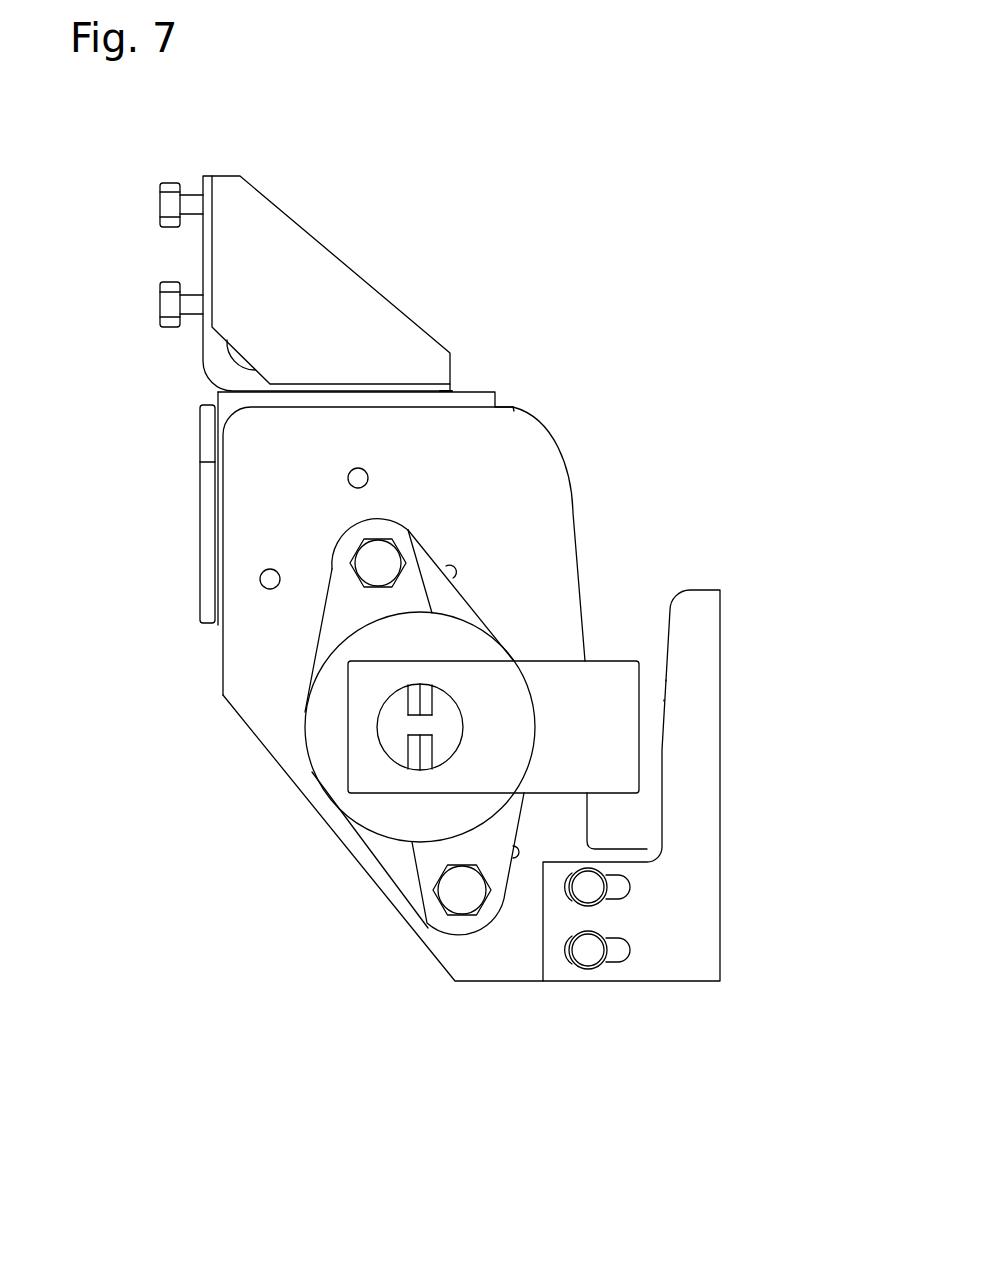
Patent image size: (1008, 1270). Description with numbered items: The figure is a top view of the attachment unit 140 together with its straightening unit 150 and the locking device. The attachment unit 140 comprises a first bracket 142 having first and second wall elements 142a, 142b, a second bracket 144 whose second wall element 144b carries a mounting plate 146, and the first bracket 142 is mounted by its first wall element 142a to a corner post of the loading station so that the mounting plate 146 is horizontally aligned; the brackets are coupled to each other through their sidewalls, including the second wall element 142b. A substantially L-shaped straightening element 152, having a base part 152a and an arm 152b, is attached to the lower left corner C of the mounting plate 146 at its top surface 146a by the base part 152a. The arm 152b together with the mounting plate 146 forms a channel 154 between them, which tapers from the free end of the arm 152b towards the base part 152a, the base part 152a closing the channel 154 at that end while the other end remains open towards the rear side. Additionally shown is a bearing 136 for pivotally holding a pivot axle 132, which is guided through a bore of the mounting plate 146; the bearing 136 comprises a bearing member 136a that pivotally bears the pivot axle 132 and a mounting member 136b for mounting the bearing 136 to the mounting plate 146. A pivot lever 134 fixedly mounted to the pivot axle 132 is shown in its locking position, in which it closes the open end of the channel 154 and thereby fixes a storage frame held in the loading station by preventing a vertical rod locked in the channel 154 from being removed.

The attachment unit 140 is at (497, 172).
The first bracket 142 is at (325, 330).
The first wall element of first bracket 142a is at (203, 268).
The second wall element of first bracket 142b is at (450, 388).
The second bracket 144 is at (517, 410).
The second wall element of second bracket 144b is at (222, 415).
The mounting plate 146 is at (224, 495).
The top surface of mounting plate 146a is at (284, 522).
The bearing 136 is at (298, 712).
The bearing member 136a is at (325, 743).
The mounting member 136b is at (372, 603).
The pivot lever 134 is at (523, 743).
The pivot axle 132 is at (402, 733).
The lower left corner of mounting plate C is at (515, 950).
The straightening unit 150 is at (713, 1020).
The L-shaped straightening element 152 is at (713, 813).
The base part 152a is at (650, 960).
The arm 152b is at (690, 692).
The channel 154 is at (643, 612).